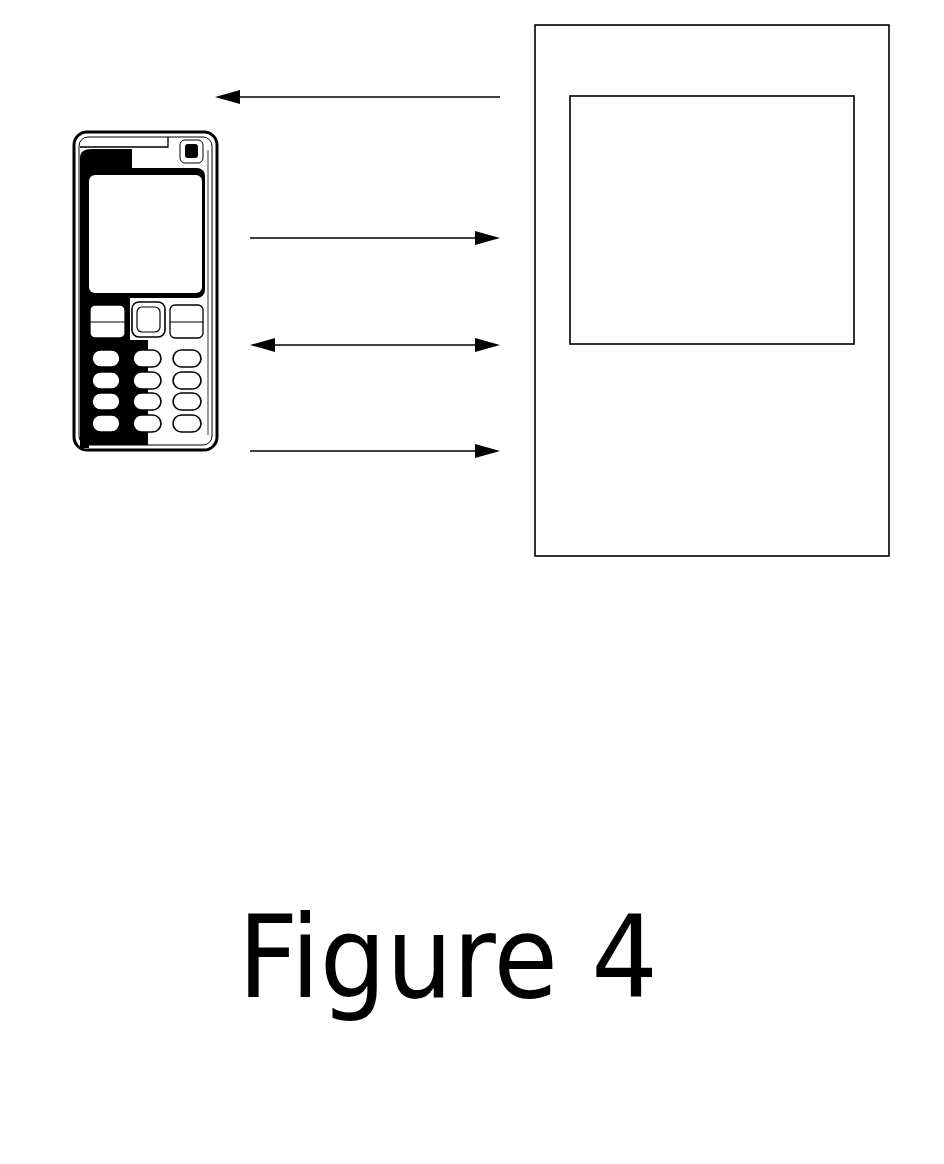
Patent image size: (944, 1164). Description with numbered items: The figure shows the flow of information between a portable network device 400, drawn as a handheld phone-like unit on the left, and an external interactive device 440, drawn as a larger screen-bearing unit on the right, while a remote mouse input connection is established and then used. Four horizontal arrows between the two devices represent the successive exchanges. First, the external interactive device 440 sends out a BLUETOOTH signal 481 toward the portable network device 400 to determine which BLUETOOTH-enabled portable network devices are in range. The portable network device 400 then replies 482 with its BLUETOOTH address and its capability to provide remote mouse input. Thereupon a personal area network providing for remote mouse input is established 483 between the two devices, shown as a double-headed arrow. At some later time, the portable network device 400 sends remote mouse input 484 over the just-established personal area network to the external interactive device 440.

The portable network device 400 is at (145, 485).
The external interactive device 440 is at (713, 593).
The BLUETOOTH range-inquiry signal 481 is at (357, 68).
The reply with BLUETOOTH address and remote mouse input capability 482 is at (375, 218).
The personal area network establishment 483 is at (375, 324).
The remote mouse input transmission 484 is at (375, 430).